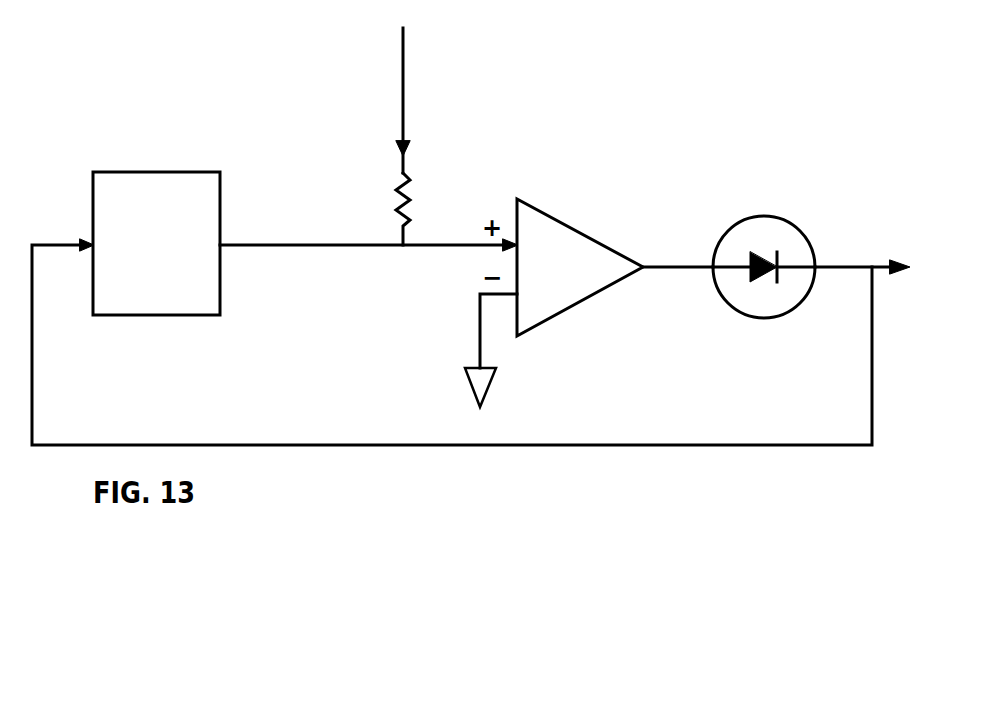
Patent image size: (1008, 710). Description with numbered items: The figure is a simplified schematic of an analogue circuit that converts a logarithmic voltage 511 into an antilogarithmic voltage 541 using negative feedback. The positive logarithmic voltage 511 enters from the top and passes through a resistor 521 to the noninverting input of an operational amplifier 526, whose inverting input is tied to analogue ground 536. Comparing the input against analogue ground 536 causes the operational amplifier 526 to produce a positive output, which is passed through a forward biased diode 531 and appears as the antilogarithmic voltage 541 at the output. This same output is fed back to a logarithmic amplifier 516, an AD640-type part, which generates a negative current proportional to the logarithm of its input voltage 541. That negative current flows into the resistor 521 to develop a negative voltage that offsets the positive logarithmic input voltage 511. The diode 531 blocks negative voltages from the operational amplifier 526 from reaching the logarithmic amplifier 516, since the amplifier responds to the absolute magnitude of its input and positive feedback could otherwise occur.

The logarithmic voltage 511 is at (403, 55).
The logarithmic amplifier 516 is at (93, 195).
The resistor 521 is at (399, 193).
The operational amplifier 526 is at (557, 213).
The forward biased diode 531 is at (760, 216).
The analogue ground 536 is at (497, 381).
The antilogarithmic voltage 541 is at (868, 241).